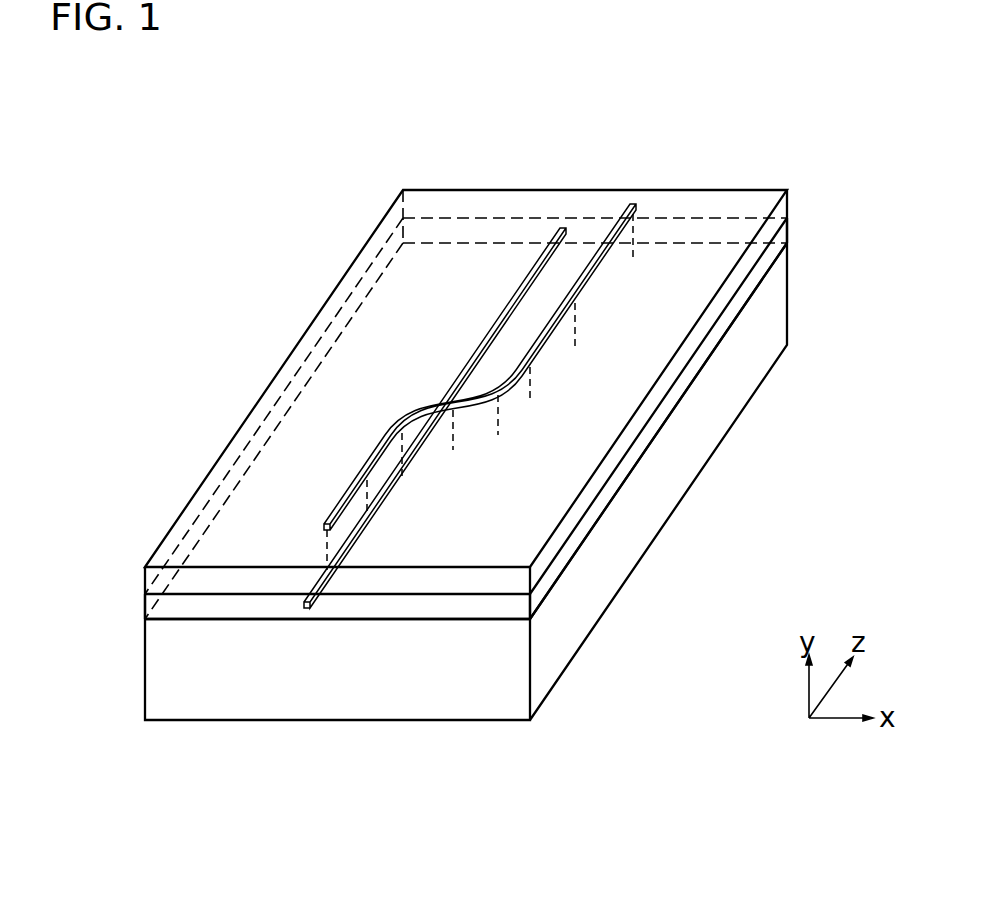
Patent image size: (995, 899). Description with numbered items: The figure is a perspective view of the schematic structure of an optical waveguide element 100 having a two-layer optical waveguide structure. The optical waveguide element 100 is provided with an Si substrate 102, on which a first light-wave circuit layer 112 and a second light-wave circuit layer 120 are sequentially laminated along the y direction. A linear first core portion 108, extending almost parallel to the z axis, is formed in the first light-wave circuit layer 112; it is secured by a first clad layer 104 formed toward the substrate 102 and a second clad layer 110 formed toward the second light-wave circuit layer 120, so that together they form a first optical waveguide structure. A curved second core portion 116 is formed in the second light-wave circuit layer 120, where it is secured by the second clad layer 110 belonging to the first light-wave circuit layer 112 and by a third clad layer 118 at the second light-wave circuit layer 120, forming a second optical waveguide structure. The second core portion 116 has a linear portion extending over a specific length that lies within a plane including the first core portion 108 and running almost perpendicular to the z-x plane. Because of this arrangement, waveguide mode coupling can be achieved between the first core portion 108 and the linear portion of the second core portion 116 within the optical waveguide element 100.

The optical waveguide element 100 is at (521, 516).
The Si substrate 102 is at (627, 552).
The first clad layer 104 is at (688, 373).
The second clad layer 110 is at (466, 418).
The first light-wave circuit layer 112 is at (628, 470).
The second light-wave circuit layer 120 is at (643, 425).
The third clad layer 118 is at (702, 335).
The first core portion 108 is at (478, 343).
The second core portion 116 is at (373, 450).